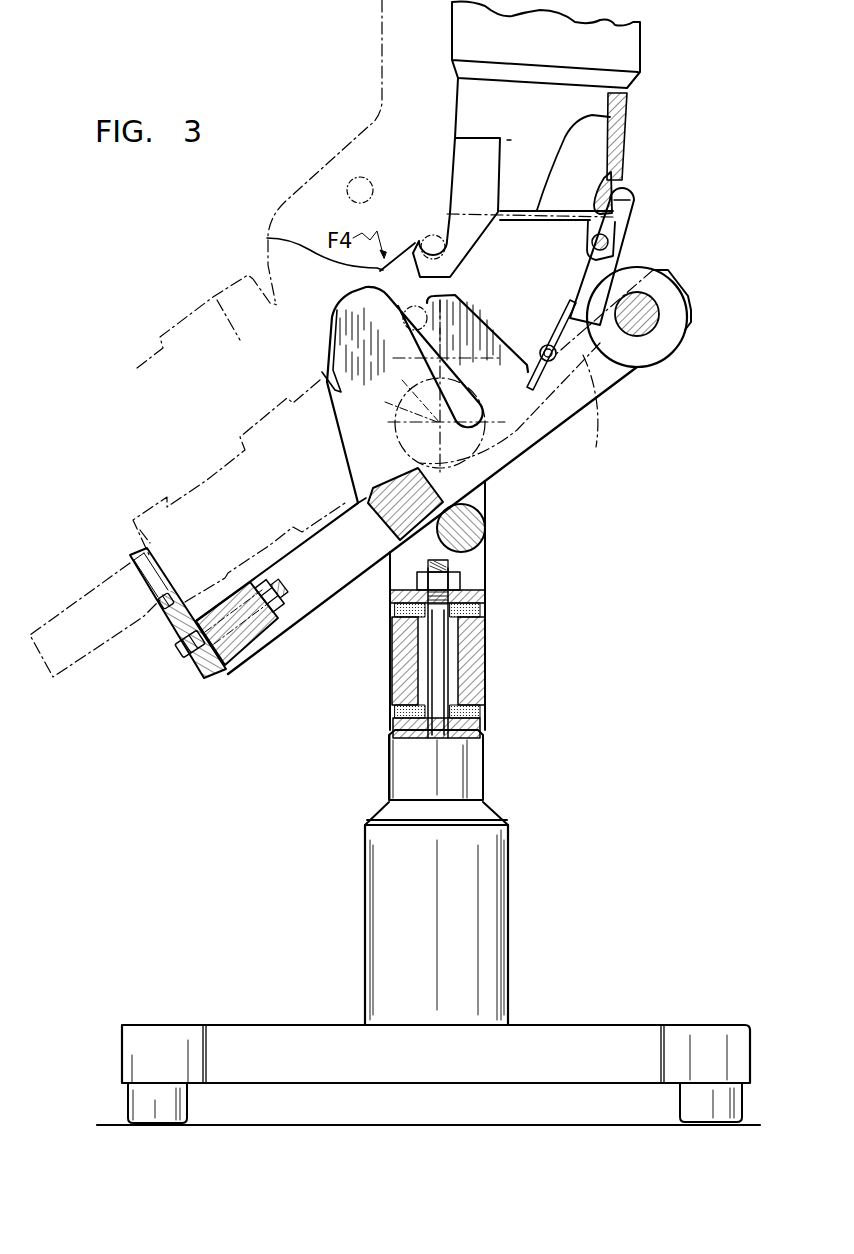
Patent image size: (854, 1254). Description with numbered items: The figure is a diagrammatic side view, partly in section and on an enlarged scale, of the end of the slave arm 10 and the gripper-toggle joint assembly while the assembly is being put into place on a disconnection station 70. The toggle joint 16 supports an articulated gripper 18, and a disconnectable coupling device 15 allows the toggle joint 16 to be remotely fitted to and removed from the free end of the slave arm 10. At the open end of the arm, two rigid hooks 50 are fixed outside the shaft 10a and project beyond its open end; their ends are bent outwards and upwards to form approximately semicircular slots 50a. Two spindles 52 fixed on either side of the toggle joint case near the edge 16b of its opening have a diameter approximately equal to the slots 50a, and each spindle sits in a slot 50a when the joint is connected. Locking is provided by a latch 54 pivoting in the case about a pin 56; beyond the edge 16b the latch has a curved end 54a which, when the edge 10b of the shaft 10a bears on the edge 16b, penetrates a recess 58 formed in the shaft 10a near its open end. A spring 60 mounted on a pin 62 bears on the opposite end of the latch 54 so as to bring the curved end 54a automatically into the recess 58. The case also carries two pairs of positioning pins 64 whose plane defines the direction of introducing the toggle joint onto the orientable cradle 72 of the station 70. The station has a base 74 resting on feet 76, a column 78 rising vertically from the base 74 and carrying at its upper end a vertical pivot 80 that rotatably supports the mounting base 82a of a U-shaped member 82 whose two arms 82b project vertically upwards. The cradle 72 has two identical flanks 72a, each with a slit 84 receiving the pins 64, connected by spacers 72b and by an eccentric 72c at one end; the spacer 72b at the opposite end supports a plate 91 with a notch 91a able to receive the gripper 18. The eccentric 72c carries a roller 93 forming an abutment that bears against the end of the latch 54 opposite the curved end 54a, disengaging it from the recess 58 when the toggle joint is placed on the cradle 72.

The slave arm 10 is at (645, 56).
The shaft 10a is at (617, 123).
The edge of the open end of the shaft 10b is at (510, 220).
The disconnectable coupling device 15 is at (651, 233).
The toggle joint 16 is at (268, 240).
The edge of the opening of the toggle joint case 16b is at (545, 213).
The articulated gripper 18 is at (215, 460).
The rigid hooks 50 is at (462, 130).
The semicircular slots 50a is at (430, 244).
The spindles 52 is at (433, 233).
The latch 54 is at (655, 262).
The curved end of the latch 54a is at (652, 222).
The pin 56 is at (612, 245).
The recess 58 is at (622, 181).
The spring 60 is at (570, 320).
The pin 62 is at (580, 365).
The pins 64 is at (407, 312).
The disconnection station 70 is at (557, 652).
The orientable cradle 72 is at (282, 622).
The flanks 72a is at (313, 597).
The spacers 72b is at (347, 560).
The eccentric 72c is at (665, 323).
The base 74 is at (262, 1035).
The feet 76 is at (128, 1112).
The column 78 is at (497, 888).
The vertical pivot 80 is at (440, 660).
The U-shaped member 82 is at (488, 567).
The mounting base 82a is at (473, 690).
The arms 82b is at (488, 507).
The slit 84 is at (433, 327).
The plate 91 is at (180, 660).
The notch 91a is at (160, 605).
The roller 93 is at (632, 360).